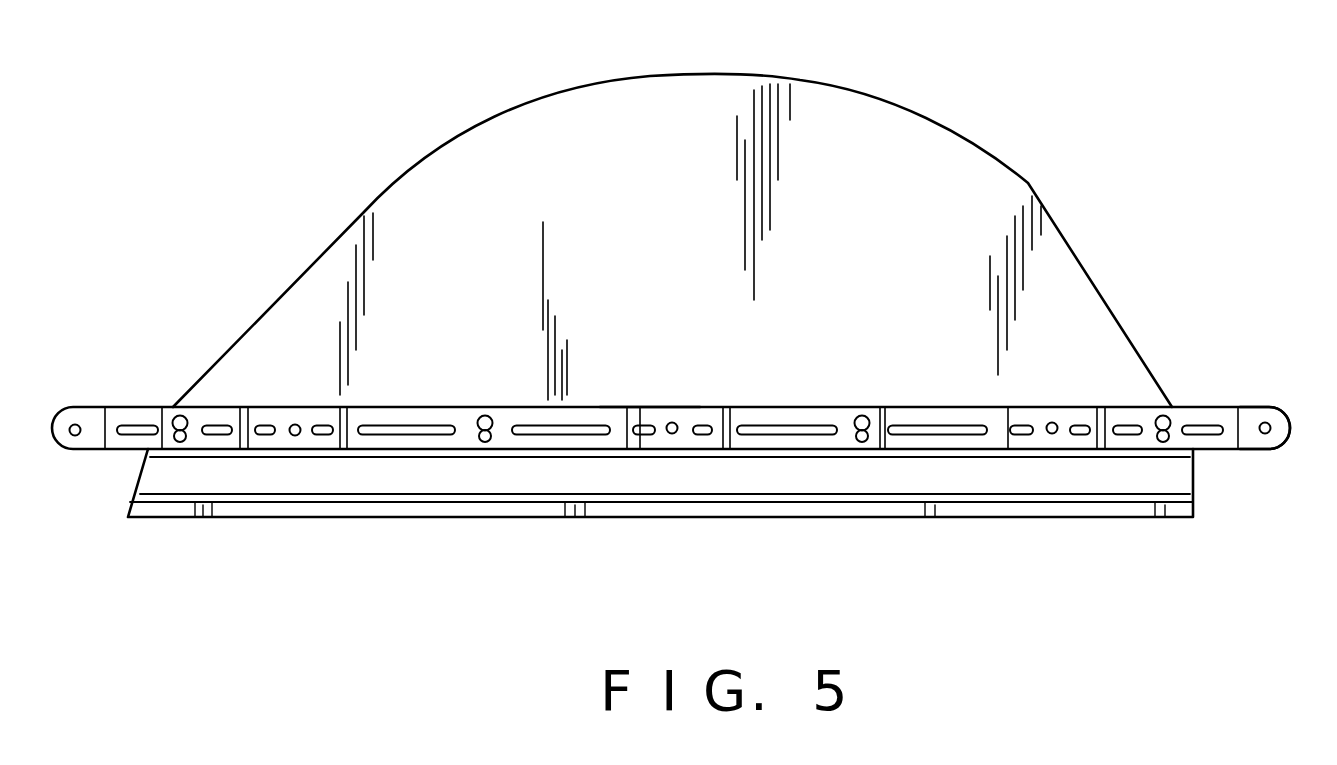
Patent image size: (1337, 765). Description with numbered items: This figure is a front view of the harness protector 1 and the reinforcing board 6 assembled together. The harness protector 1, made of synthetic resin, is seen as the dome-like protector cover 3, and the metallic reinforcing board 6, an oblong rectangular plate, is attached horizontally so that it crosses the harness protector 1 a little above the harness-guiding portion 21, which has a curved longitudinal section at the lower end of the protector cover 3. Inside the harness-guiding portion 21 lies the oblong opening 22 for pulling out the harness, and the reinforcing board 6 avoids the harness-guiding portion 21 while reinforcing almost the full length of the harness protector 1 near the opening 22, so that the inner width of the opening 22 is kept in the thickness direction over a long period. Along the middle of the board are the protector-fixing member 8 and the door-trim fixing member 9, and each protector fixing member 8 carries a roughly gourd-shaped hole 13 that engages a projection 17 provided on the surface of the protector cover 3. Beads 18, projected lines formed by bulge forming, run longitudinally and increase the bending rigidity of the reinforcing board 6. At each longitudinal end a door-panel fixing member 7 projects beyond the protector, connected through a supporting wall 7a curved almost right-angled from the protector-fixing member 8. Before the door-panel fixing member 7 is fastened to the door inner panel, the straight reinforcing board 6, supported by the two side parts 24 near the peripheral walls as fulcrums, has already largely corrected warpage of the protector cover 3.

The harness protector 1 is at (928, 114).
The protector cover 3 is at (1010, 208).
The reinforcing board 6 is at (650, 395).
The door-panel fixing member 7 is at (1262, 448).
The supporting wall 7a is at (1246, 407).
The protector-fixing member 8 is at (228, 407).
The door-trim fixing member 9 is at (308, 450).
The hole 13 is at (866, 449).
The projection 17 is at (862, 407).
The bead 18 is at (975, 449).
The harness-guiding portion 21 is at (750, 490).
The opening 22 is at (607, 517).
The side part 24 is at (175, 403).